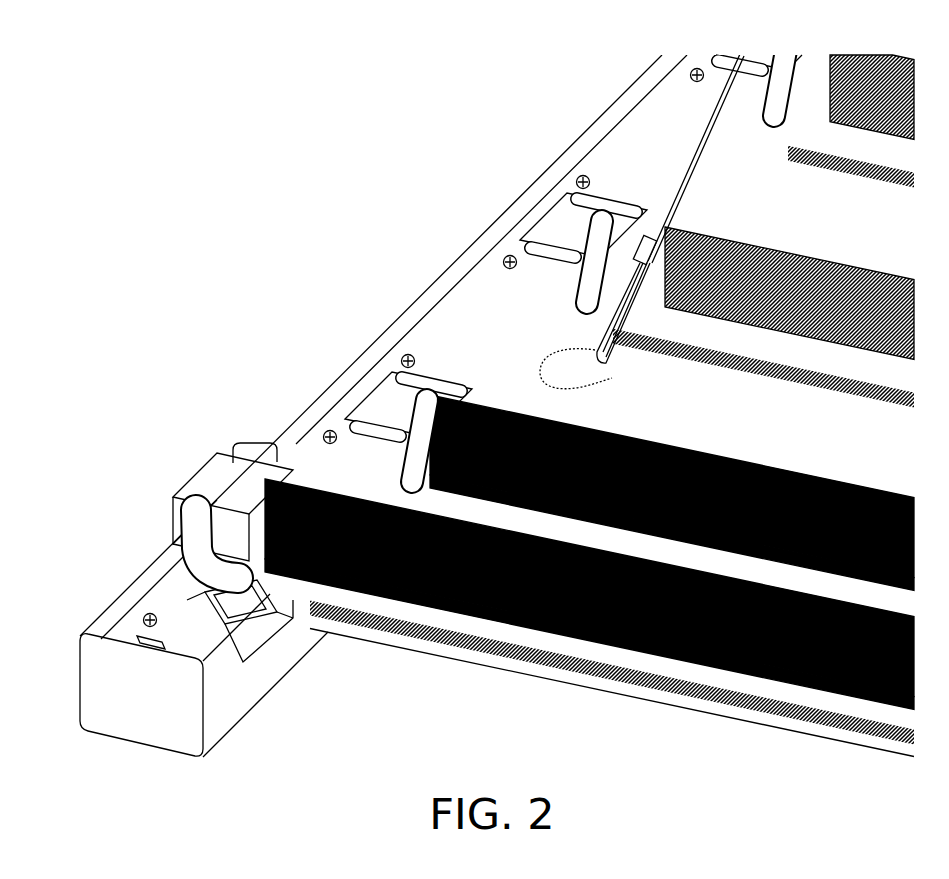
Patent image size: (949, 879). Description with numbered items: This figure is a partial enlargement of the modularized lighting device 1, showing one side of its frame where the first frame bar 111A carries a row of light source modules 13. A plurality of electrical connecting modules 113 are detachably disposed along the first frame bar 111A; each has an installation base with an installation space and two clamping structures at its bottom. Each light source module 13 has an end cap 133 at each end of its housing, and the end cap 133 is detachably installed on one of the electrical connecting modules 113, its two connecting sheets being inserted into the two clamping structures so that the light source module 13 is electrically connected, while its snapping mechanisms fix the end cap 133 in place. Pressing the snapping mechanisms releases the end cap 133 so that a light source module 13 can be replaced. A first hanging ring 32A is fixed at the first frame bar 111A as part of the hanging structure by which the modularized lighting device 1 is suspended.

The modularized lighting device 1 is at (284, 124).
The light source module 13 is at (680, 221).
The first hanging ring 32A is at (594, 387).
The first frame bar 111A is at (480, 291).
The electrical connecting module 113 is at (257, 663).
The end cap 133 is at (555, 226).